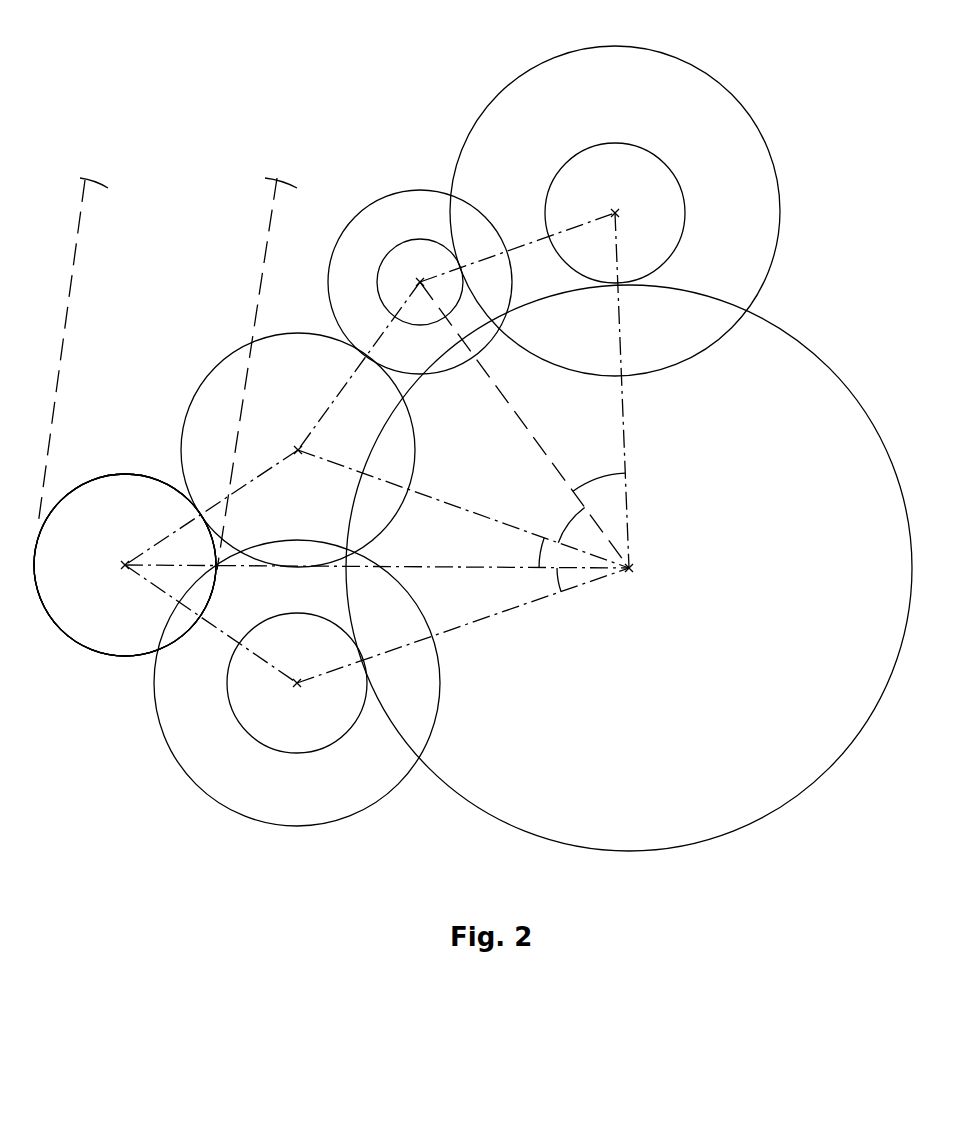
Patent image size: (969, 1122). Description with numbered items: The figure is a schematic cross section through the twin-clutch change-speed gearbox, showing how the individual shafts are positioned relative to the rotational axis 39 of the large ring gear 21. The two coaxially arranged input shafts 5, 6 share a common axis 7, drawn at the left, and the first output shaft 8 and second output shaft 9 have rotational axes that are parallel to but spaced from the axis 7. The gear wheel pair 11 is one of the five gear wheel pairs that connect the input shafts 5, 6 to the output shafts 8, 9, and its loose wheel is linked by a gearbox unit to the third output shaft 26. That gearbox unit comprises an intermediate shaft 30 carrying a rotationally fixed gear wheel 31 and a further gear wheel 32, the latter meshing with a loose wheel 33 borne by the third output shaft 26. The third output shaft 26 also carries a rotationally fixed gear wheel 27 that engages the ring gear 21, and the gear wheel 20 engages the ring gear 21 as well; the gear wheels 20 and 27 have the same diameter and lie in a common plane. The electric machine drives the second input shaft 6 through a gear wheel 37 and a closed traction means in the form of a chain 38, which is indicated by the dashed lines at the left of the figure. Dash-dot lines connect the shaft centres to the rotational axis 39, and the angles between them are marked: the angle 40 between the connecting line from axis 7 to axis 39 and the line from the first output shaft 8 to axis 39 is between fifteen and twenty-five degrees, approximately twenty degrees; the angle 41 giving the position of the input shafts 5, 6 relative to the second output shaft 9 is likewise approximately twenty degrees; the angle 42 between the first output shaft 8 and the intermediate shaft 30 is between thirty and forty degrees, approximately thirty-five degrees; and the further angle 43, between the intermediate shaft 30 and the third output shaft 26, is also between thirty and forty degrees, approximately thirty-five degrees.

The first input shaft 5 is at (125, 538).
The second input shaft 6 is at (125, 538).
The common axis 7 is at (137, 442).
The first output shaft 8 is at (298, 450).
The second output shaft 9 is at (297, 683).
The gear wheel pair 11 is at (276, 333).
The gear wheel 20 is at (257, 742).
The ring gear 21 is at (738, 834).
The third output shaft 26 is at (615, 210).
The gear wheel 27 is at (677, 178).
The intermediate shaft 30 is at (420, 282).
The gear wheel 31 is at (407, 190).
The further gear wheel 32 is at (386, 257).
The loose wheel 33 is at (647, 48).
The gear wheel 37 is at (86, 650).
The chain 38 is at (268, 217).
The rotational axis of the ring gear 39 is at (630, 569).
The angle 40 is at (540, 553).
The angle 41 is at (557, 585).
The angle 42 is at (567, 527).
The further angle 43 is at (594, 477).